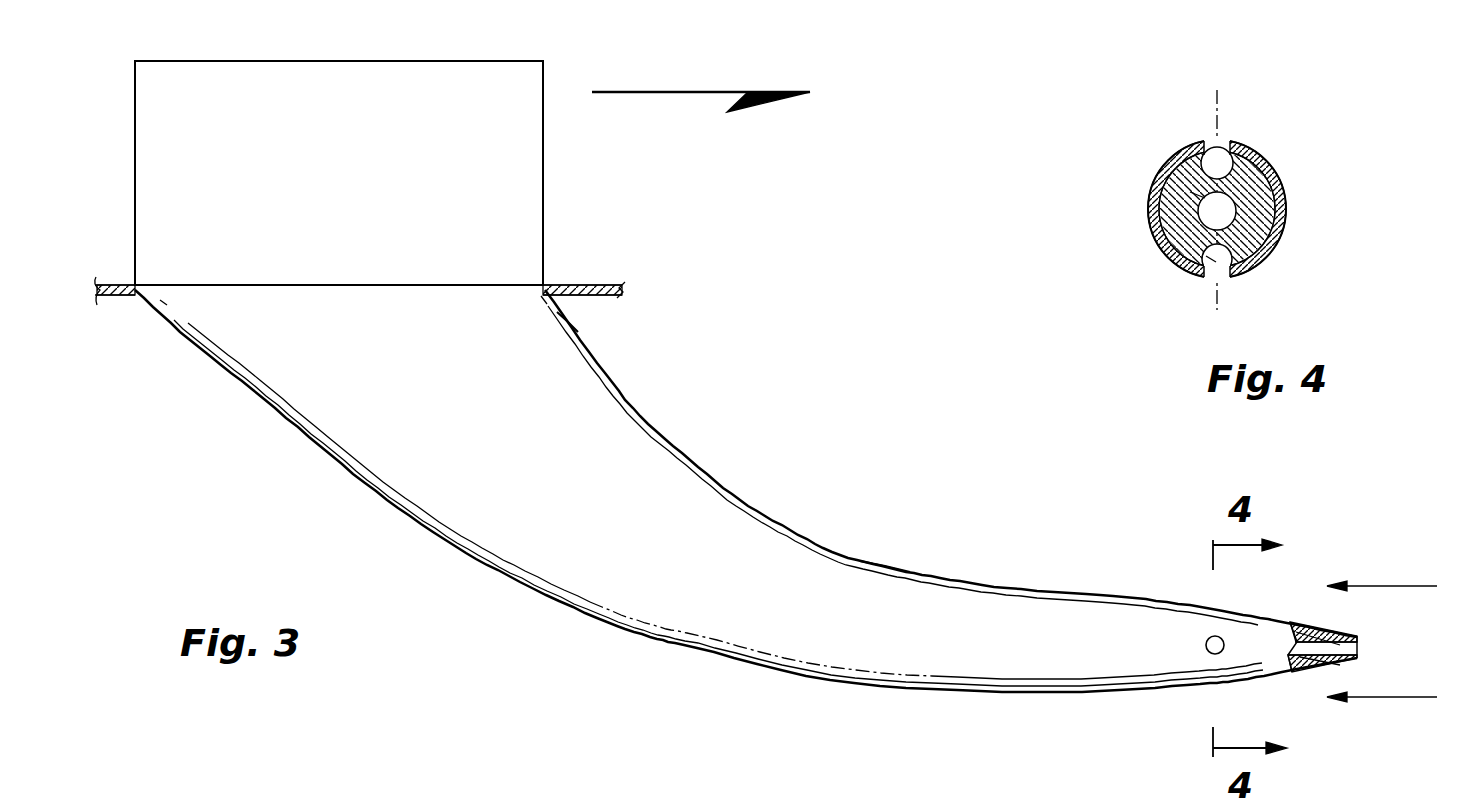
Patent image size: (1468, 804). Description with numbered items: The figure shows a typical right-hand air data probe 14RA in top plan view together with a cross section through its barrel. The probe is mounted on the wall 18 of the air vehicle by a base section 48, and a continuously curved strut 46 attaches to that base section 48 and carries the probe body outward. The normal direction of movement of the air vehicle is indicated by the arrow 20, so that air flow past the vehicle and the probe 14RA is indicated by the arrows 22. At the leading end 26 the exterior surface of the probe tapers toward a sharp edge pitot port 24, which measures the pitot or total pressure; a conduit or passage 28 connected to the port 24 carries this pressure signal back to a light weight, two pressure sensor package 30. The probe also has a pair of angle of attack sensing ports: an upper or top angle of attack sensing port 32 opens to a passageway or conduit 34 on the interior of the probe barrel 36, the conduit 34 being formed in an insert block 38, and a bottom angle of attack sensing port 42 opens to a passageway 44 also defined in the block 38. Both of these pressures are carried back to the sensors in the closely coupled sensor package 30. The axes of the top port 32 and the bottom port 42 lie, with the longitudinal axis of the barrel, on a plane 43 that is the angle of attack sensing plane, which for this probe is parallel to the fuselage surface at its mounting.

In FIG. 3, the air data probe 14RA is at (680, 470).
In FIG. 3, the wall 18 is at (575, 286).
In FIG. 3, the arrow 20 is at (685, 92).
In FIG. 3, the arrows 22 is at (1387, 585).
In FIG. 3, the sharp edge pitot port 24 is at (1358, 646).
In FIG. 3, the leading end 26 is at (1302, 666).
In FIG. 3, the conduit or passage 28 is at (1350, 666).
In FIG. 4, the conduit or passage 28 is at (1198, 194).
In FIG. 3, the sensor package 30 is at (523, 200).
In FIG. 3, the top angle of attack sensing port 32 is at (1208, 638).
In FIG. 4, the top angle of attack sensing port 32 is at (1222, 142).
In FIG. 4, the passageway or conduit 34 is at (1242, 160).
In FIG. 4, the probe barrel 36 is at (1152, 230).
In FIG. 4, the insert block 38 is at (1260, 203).
In FIG. 4, the bottom angle of attack sensing port 42 is at (1222, 278).
In FIG. 4, the plane 43 is at (1213, 125).
In FIG. 4, the passageway 44 is at (1205, 258).
In FIG. 3, the continuously curved strut 46 is at (868, 588).
In FIG. 3, the base section 48 is at (563, 333).